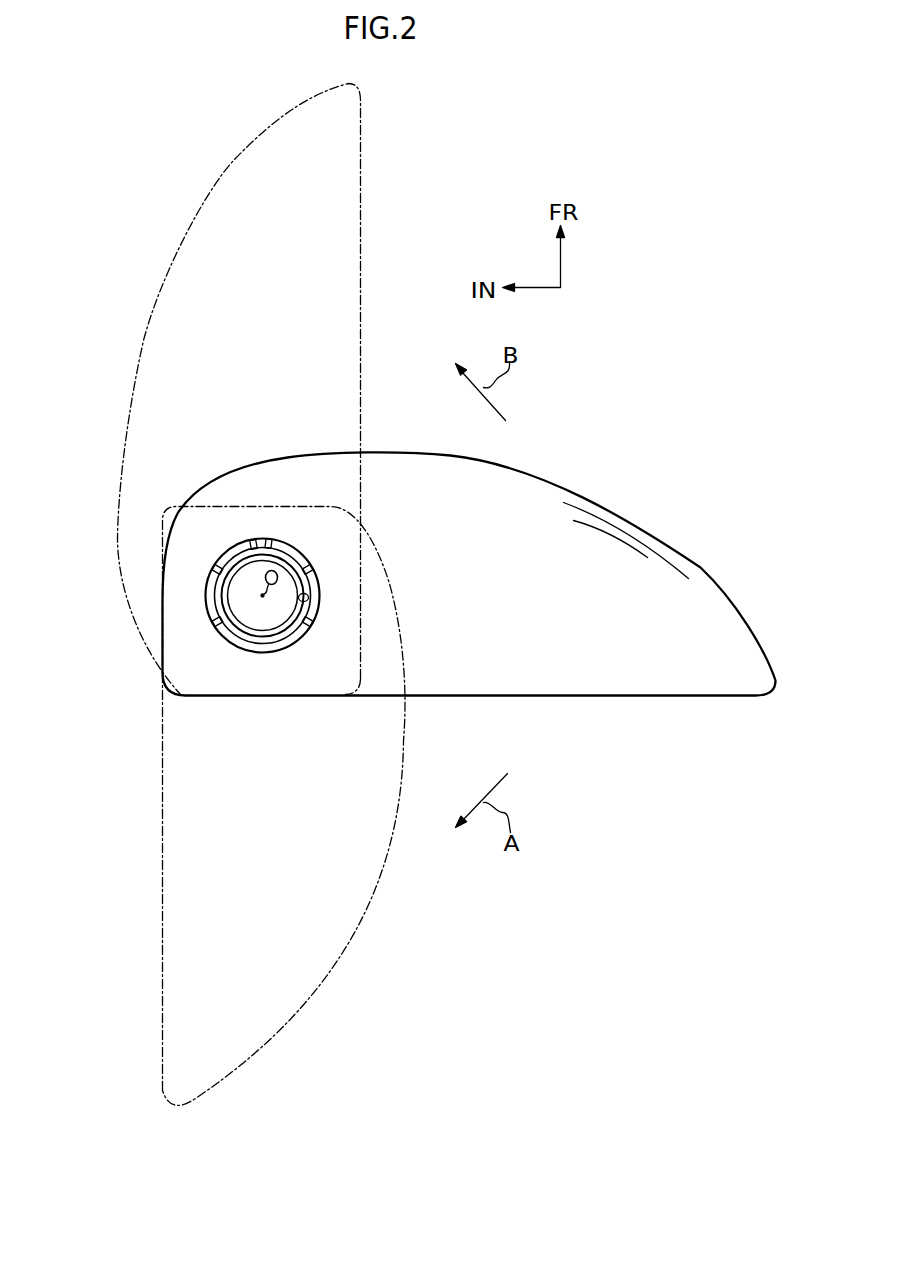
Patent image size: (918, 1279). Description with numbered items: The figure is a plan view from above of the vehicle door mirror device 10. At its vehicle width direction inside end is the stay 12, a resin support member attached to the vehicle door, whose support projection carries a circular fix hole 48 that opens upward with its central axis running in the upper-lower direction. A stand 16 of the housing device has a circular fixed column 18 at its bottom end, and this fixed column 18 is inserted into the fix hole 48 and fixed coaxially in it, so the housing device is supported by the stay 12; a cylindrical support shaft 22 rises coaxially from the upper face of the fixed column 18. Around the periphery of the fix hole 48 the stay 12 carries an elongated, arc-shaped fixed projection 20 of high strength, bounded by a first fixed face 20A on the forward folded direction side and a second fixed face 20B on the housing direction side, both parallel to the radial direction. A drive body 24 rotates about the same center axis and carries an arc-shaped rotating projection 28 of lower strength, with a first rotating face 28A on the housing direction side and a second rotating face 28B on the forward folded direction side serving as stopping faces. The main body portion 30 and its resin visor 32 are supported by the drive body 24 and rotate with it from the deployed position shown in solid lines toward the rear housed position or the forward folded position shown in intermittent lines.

The vehicle door mirror device 10 is at (637, 367).
The stay 12 is at (273, 612).
The stand 16 is at (265, 597).
The fixed column 18 is at (233, 573).
The fixed projection 20 is at (250, 645).
The first fixed face 20A is at (312, 613).
The second fixed face 20B is at (212, 622).
The support shaft 22 is at (267, 634).
The drive body 24 is at (318, 540).
The rotating projection 28 is at (253, 540).
The first rotating face 28A is at (318, 576).
The second rotating face 28B is at (215, 570).
The main body portion 30 is at (383, 595).
The visor 32 is at (361, 172).
The fix hole 48 is at (308, 597).